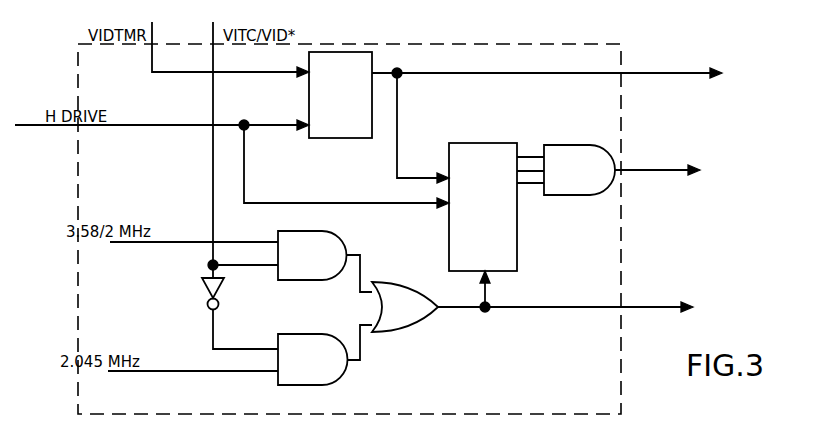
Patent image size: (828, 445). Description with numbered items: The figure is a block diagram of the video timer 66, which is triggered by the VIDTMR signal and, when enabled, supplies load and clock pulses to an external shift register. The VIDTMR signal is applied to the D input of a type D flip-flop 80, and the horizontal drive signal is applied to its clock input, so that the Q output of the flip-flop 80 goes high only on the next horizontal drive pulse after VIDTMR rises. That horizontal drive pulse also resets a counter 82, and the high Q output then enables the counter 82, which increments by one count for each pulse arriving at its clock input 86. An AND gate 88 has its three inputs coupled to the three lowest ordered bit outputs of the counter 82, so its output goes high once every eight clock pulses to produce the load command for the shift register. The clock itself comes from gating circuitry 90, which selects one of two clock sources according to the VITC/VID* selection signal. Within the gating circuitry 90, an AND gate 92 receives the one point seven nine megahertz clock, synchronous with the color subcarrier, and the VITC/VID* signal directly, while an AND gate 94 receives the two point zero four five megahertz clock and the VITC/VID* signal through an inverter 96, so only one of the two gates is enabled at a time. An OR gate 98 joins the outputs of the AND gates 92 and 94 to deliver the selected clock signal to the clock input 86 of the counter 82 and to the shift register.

The video timer 66 is at (622, 243).
The type D flip-flop 80 is at (364, 66).
The counter 82 is at (477, 146).
The clock input 86 is at (489, 300).
The AND gate 88 is at (622, 170).
The gating circuitry 90 is at (358, 308).
The AND gate 92 is at (312, 255).
The AND gate 94 is at (313, 359).
The inverter 96 is at (222, 291).
The OR gate 98 is at (405, 307).